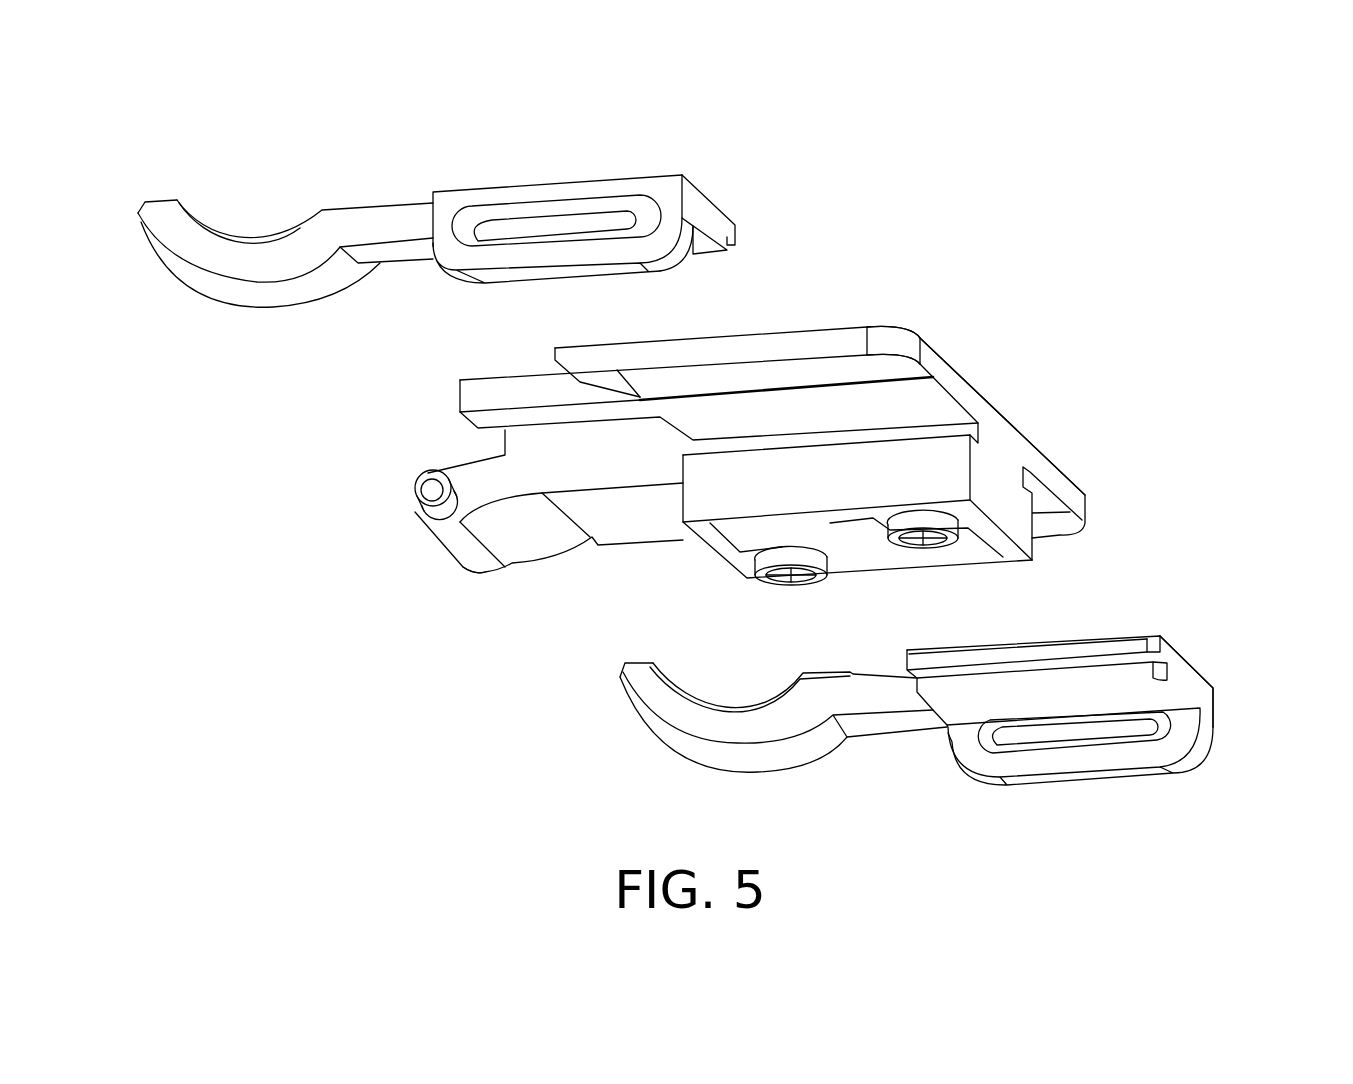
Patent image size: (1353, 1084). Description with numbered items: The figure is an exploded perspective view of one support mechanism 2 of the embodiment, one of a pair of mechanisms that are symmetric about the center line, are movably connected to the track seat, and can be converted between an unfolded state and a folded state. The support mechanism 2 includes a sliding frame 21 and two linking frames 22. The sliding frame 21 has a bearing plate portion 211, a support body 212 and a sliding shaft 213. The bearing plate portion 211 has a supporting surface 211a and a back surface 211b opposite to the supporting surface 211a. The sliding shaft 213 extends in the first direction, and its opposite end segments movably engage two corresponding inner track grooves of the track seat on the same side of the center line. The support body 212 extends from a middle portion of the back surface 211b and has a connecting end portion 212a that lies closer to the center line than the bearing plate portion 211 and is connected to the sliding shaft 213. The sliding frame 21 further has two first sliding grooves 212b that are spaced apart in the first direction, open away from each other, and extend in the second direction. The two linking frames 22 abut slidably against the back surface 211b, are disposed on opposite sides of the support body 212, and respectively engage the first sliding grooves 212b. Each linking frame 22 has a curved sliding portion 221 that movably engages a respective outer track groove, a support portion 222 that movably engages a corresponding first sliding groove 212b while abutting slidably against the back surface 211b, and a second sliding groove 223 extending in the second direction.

The support mechanism 2 is at (1057, 345).
The sliding frame 21 is at (1028, 432).
The bearing plate portion 211 is at (1050, 480).
The supporting surface 211a is at (975, 387).
The back surface 211b is at (893, 378).
The support body 212 is at (623, 517).
The connecting end portion 212a is at (468, 545).
The first sliding groove 212b is at (898, 435).
The sliding shaft 213 is at (430, 488).
The linking frame 22 is at (546, 172).
The curved sliding portion 221 is at (168, 225).
The support portion 222 is at (705, 210).
The second sliding groove 223 is at (517, 248).